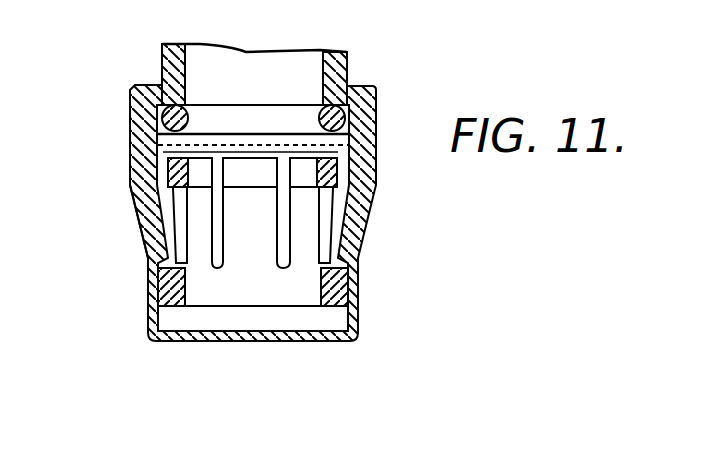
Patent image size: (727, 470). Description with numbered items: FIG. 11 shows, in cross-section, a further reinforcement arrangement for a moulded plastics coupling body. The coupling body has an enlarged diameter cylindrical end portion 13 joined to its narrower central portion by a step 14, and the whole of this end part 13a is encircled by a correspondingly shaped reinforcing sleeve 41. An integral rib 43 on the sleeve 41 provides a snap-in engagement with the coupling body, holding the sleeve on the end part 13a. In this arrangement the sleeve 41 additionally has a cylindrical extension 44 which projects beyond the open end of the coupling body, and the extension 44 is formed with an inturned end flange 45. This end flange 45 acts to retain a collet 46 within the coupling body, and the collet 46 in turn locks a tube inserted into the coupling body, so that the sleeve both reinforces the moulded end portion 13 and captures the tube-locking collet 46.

The enlarged diameter cylindrical end portion 13 is at (372, 148).
The end part 13a is at (158, 243).
The step 14 is at (345, 93).
The reinforcing sleeve 41 is at (130, 207).
The rib 43 is at (133, 87).
The cylindrical extension 44 is at (147, 322).
The inturned end flange 45 is at (180, 338).
The collet 46 is at (250, 287).